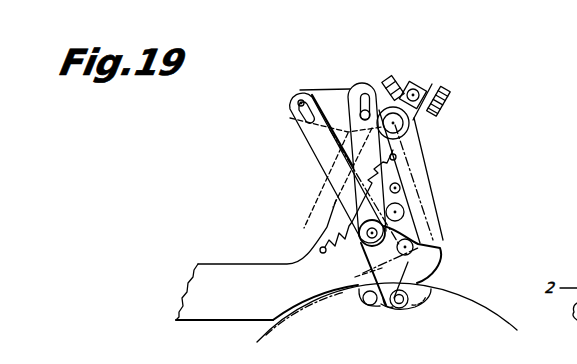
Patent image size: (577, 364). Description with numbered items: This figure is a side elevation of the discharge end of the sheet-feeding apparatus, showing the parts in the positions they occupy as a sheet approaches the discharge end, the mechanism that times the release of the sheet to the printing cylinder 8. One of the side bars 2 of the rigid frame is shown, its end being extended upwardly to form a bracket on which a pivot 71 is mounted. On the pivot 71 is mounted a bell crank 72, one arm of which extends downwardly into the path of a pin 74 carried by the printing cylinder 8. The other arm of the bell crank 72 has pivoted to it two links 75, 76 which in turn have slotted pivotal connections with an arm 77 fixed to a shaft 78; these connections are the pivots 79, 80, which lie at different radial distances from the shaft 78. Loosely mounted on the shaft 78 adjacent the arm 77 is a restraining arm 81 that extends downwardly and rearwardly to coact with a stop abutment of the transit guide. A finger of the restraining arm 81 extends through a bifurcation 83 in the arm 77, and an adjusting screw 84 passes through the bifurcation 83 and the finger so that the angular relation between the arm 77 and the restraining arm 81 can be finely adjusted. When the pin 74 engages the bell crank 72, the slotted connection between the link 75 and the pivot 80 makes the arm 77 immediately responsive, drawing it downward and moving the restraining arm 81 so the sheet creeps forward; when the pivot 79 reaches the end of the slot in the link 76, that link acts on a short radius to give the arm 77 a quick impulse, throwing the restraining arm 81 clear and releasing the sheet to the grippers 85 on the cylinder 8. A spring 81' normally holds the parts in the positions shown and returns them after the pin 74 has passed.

The side bars 2 is at (229, 270).
The printing cylinder 8 is at (486, 311).
The pivot 71 is at (430, 239).
The bell crank 72 is at (380, 251).
The pin 74 is at (368, 304).
The link 75 is at (317, 146).
The link 76 is at (365, 96).
The arm 77 is at (324, 92).
The shaft 78 is at (411, 126).
The pivot 79 is at (348, 91).
The pivot 80 is at (298, 101).
The restraining arm 81 is at (434, 196).
The spring 81' is at (342, 201).
The bifurcation 83 is at (420, 100).
The adjusting screw 84 is at (441, 101).
The grippers 85 is at (416, 303).